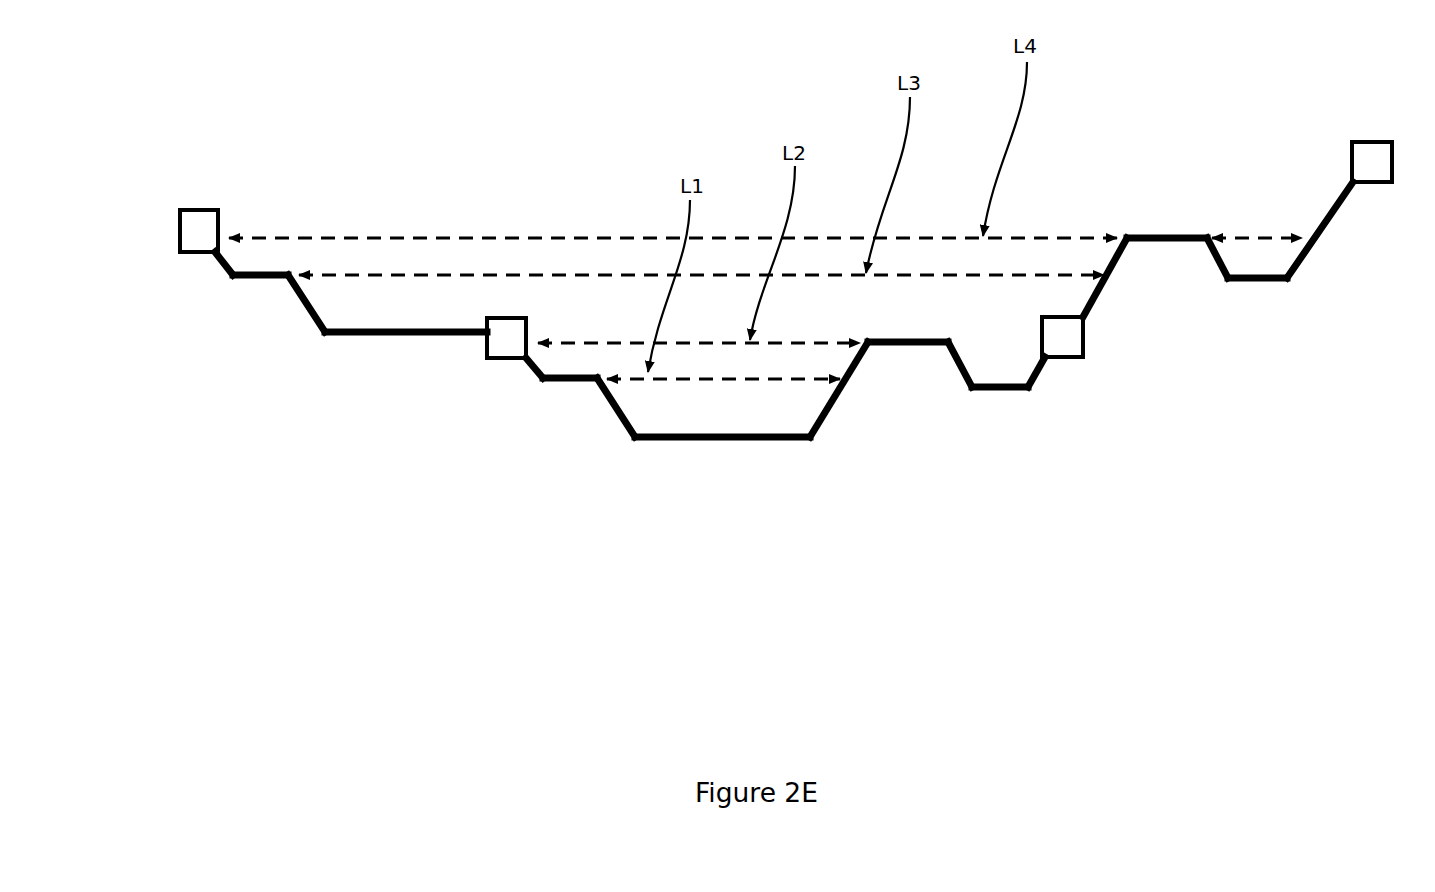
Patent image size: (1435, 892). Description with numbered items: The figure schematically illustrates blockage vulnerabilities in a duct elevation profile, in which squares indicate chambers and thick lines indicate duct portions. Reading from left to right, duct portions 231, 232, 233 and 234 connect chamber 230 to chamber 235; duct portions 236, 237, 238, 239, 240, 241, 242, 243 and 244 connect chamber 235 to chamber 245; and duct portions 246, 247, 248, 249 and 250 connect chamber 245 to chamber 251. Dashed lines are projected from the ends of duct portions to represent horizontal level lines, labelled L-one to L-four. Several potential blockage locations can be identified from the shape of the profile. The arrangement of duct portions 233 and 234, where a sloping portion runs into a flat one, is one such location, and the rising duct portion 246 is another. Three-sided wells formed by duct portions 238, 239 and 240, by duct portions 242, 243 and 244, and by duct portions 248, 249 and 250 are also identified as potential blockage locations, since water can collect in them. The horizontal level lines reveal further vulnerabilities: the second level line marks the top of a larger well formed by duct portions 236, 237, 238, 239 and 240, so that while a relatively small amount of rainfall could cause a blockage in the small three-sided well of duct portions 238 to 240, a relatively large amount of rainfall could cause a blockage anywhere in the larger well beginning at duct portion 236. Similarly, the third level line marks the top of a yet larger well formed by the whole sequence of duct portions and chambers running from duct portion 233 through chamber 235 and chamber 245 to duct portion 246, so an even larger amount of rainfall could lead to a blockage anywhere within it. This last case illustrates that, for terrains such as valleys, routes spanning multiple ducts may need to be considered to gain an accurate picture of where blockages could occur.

The chamber 230 is at (179, 227).
The duct portion 231 is at (222, 257).
The duct portion 232 is at (262, 283).
The duct portion 233 is at (310, 326).
The duct portion 234 is at (410, 340).
The chamber 235 is at (529, 327).
The duct portion 236 is at (528, 377).
The duct portion 237 is at (565, 388).
The duct portion 238 is at (620, 427).
The duct portion 239 is at (722, 445).
The duct portion 240 is at (829, 427).
The duct portion 241 is at (912, 350).
The duct portion 242 is at (958, 381).
The duct portion 243 is at (985, 396).
The duct portion 244 is at (1039, 381).
The chamber 245 is at (1089, 343).
The duct portion 246 is at (1098, 299).
The duct portion 247 is at (1149, 231).
The duct portion 248 is at (1211, 259).
The duct portion 249 is at (1249, 290).
The duct portion 250 is at (1313, 249).
The chamber 251 is at (1377, 139).